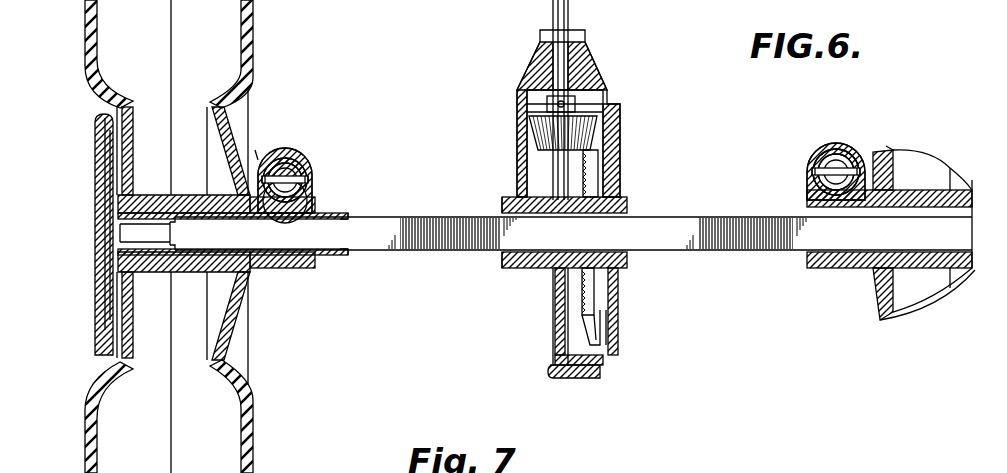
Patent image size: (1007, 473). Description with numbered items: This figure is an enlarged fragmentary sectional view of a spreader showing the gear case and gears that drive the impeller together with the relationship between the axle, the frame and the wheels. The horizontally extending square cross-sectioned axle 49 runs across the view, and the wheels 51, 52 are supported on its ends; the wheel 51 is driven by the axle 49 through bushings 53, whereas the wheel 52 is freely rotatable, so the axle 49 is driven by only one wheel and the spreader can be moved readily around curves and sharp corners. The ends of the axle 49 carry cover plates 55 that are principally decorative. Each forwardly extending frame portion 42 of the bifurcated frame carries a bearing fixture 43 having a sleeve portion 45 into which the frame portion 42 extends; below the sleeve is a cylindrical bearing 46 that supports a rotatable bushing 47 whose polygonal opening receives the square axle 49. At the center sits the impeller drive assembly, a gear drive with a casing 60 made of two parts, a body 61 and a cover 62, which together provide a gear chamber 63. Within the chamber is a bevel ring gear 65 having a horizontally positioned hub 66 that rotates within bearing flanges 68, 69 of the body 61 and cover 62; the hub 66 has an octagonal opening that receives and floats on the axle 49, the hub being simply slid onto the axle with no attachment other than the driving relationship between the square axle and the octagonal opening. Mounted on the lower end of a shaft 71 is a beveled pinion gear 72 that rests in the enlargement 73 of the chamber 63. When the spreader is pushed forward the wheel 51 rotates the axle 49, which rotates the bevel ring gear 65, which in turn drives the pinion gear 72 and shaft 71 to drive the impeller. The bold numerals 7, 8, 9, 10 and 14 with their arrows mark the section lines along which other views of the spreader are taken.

The frame portion 42 is at (302, 164).
The bearing fixture 43 is at (312, 190).
The sleeve portion 45 is at (292, 152).
The cylindrical bearing 46 is at (300, 270).
The rotatable bushing 47 is at (315, 258).
The axle 49 is at (745, 250).
The wheel 51 is at (247, 18).
The wheel 52 is at (887, 148).
The bushings 53 is at (145, 268).
The cover plate 55 is at (100, 205).
The casing 60 is at (596, 92).
The body 61 is at (618, 318).
The cover 62 is at (517, 268).
The gear chamber 63 is at (577, 332).
The bevel ring gear 65 is at (600, 172).
The hub 66 is at (627, 204).
The bearing flange 68 is at (627, 264).
The bearing flange 69 is at (505, 268).
The shaft 71 is at (550, 20).
The beveled pinion gear 72 is at (592, 132).
The enlargement 73 is at (520, 132).
The section line 7- 7 is at (156, 165).
The section line 8- 8 is at (286, 140).
The section line 9- 9 is at (530, 178).
The section line 10- 10 is at (657, 115).
The section line 14- 14 is at (906, 186).